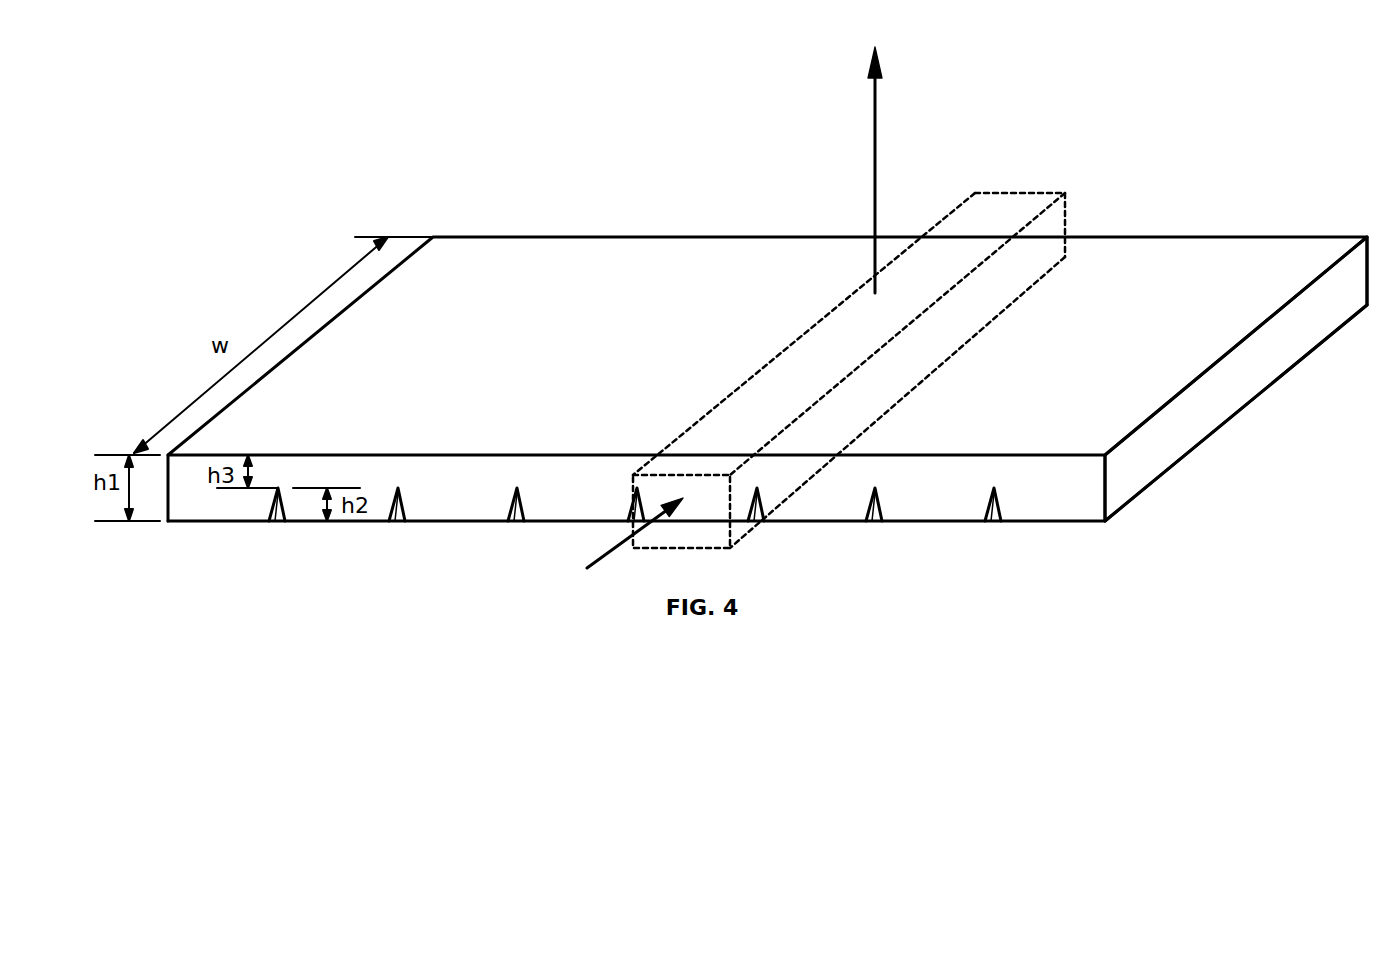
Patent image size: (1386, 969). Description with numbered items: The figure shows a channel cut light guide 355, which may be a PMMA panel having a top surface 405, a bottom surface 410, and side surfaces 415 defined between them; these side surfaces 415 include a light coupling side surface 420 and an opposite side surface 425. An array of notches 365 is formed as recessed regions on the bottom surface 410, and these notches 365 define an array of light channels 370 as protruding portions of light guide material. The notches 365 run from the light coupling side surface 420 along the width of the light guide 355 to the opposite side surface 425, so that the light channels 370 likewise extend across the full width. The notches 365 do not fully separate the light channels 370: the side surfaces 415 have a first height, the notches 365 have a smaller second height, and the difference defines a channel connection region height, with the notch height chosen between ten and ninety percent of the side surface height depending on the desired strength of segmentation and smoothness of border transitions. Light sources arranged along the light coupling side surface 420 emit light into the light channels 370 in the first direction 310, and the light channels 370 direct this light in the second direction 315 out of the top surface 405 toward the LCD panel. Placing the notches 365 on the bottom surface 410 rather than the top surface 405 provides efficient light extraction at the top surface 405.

The channel cut light guide 355 is at (767, 398).
The top surface 405 is at (510, 278).
The bottom surface 410 is at (1147, 488).
The side surfaces 415 is at (1290, 342).
The light coupling side surface 420 is at (200, 512).
The opposite side surface 425 is at (1292, 257).
The notches 365 is at (762, 525).
The light channels 370 is at (907, 327).
The first direction 310 is at (572, 582).
The second direction 315 is at (880, 117).